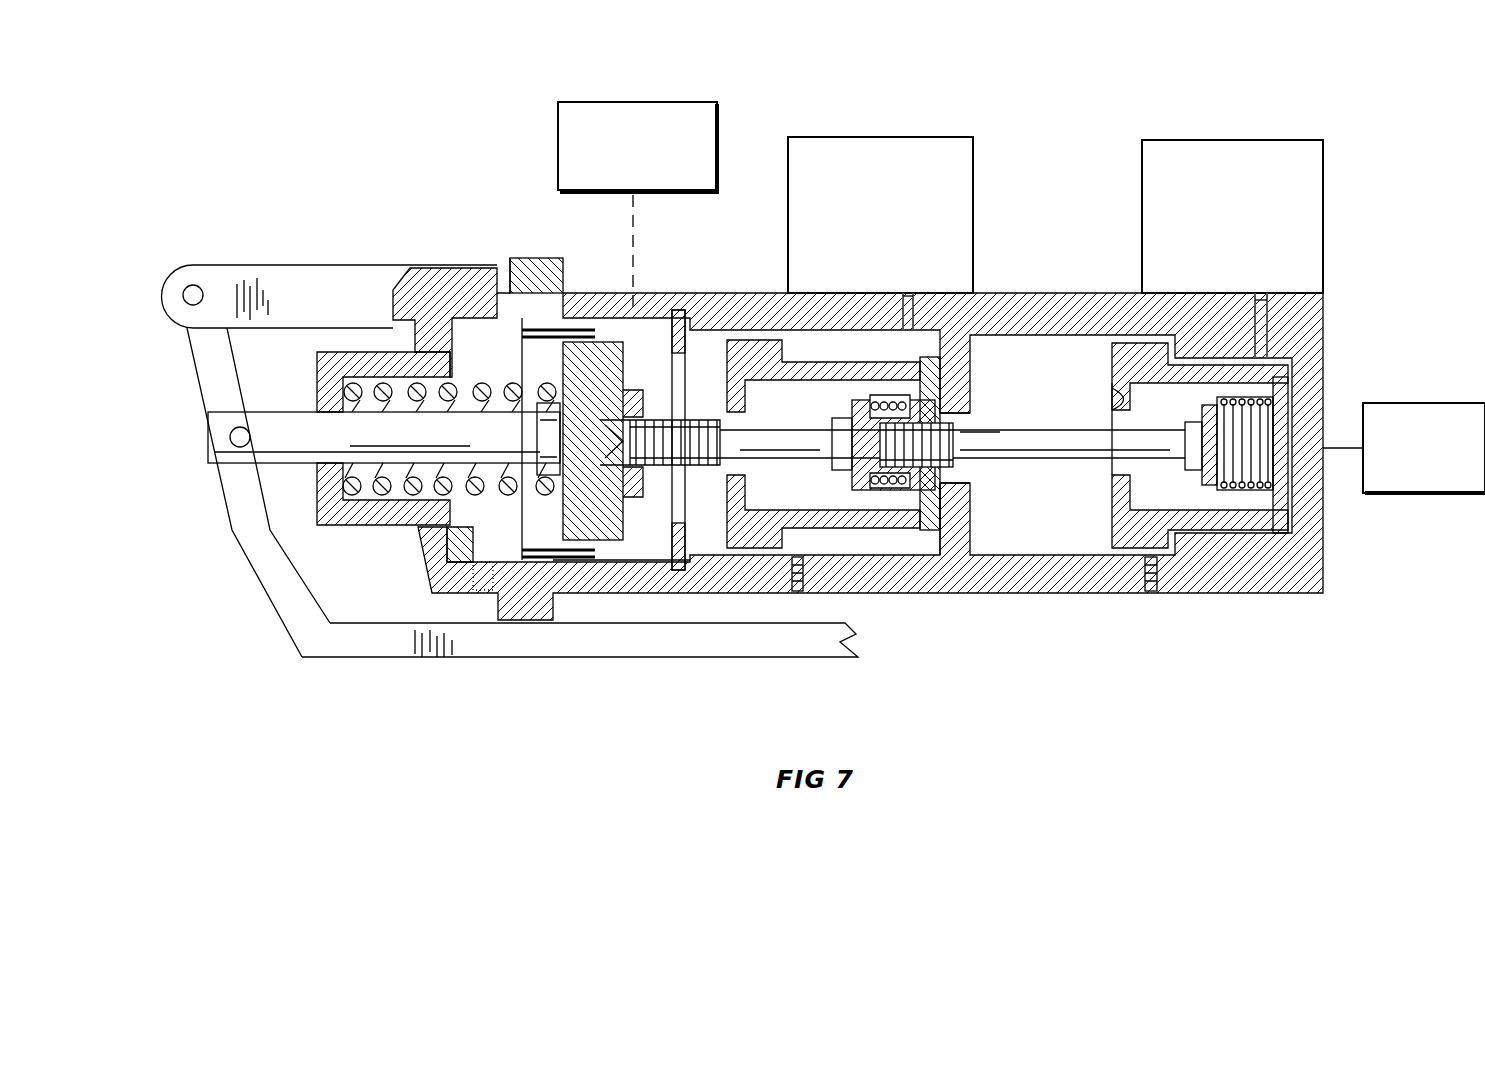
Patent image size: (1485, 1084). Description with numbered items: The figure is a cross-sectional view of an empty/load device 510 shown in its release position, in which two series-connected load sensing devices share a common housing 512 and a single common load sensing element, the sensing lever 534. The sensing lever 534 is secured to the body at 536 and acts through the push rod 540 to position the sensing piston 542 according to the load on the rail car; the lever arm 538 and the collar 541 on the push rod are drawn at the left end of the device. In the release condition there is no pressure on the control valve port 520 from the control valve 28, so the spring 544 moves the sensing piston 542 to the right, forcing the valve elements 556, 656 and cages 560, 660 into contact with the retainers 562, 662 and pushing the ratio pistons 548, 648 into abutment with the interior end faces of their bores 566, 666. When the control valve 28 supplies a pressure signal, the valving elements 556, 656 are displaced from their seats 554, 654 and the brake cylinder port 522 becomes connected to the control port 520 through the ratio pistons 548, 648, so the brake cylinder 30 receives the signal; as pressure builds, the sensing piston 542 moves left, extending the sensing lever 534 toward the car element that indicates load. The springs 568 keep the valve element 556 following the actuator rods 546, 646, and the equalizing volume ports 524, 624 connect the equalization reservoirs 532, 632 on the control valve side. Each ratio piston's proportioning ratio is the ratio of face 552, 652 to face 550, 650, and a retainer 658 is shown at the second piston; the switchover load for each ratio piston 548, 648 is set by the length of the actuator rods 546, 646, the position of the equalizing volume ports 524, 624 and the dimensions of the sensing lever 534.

The empty/load device 510 is at (483, 206).
The common housing 512 is at (536, 255).
The spring 544 is at (455, 368).
The push rod 540 is at (293, 409).
The lever arm 538 is at (242, 448).
The lever securing point 536 is at (212, 282).
The sensing lever 534 is at (607, 641).
The spring collar 541 is at (526, 436).
The sensing piston 542 is at (620, 542).
The brake cylinder port 522 is at (667, 326).
The face 550 is at (722, 504).
The seat 554 is at (700, 414).
The actuator rod 546 is at (769, 431).
The face 552 is at (746, 501).
The valve element 556 is at (867, 512).
The cage 560 is at (890, 502).
The ratio piston 548 is at (710, 536).
The equalization reservoir 532 is at (976, 214).
The bore 566 is at (834, 352).
The equalizing volume port 524 is at (912, 301).
The spring 568 is at (944, 414).
The actuator rod 646 is at (1010, 450).
The retainer 562 is at (1010, 502).
The equalization reservoir 632 is at (1142, 191).
The bore 666 is at (1216, 356).
The equalizing volume port 624 is at (1270, 313).
The face 652 is at (1126, 497).
The seat 654 is at (1114, 413).
The face 650 is at (1119, 532).
The retainer 662 is at (1290, 502).
The cage 660 is at (1246, 496).
The valve element 656 is at (1208, 497).
The retainer 658 is at (1274, 430).
The ratio piston 648 is at (1090, 560).
The control valve port 520 is at (1318, 478).
The brake cylinder 30 is at (720, 126).
The control valve 28 is at (1399, 488).